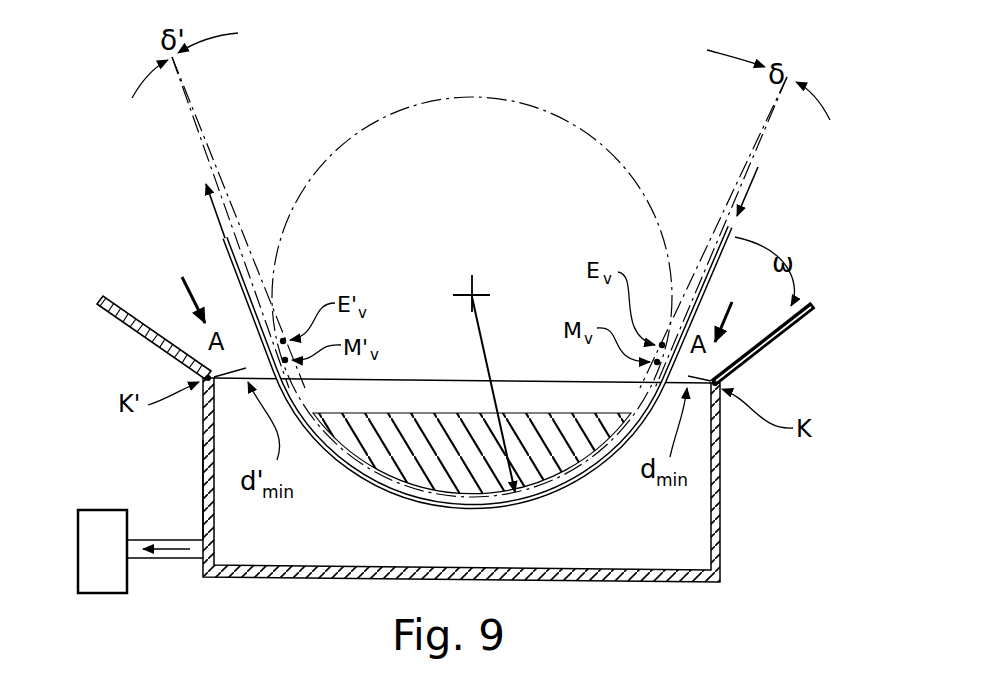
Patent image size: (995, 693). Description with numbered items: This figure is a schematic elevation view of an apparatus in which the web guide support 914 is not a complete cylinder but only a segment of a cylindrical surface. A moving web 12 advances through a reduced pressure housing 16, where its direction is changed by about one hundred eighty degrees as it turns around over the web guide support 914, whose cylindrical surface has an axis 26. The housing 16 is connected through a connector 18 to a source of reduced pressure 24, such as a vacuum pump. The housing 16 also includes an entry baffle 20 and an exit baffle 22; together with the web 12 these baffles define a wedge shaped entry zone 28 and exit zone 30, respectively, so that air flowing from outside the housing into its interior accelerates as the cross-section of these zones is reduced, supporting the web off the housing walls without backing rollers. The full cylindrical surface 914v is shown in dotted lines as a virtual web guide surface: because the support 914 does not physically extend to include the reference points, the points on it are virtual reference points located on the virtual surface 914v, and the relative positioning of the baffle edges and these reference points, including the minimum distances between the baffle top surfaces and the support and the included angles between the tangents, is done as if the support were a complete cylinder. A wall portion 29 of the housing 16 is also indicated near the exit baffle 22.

The moving web 12 is at (718, 227).
The reduced pressure housing 16 is at (722, 528).
The connector 18 is at (168, 560).
The entry baffle 20 is at (779, 343).
The exit baffle 22 is at (153, 341).
The source of reduced pressure 24 is at (103, 512).
The axis 26 is at (475, 294).
The entry zone 28 is at (709, 311).
The tank wall 29 is at (201, 497).
The exit zone 30 is at (206, 278).
The web guide support 914 is at (516, 498).
The virtual web guide surface 914v is at (416, 96).